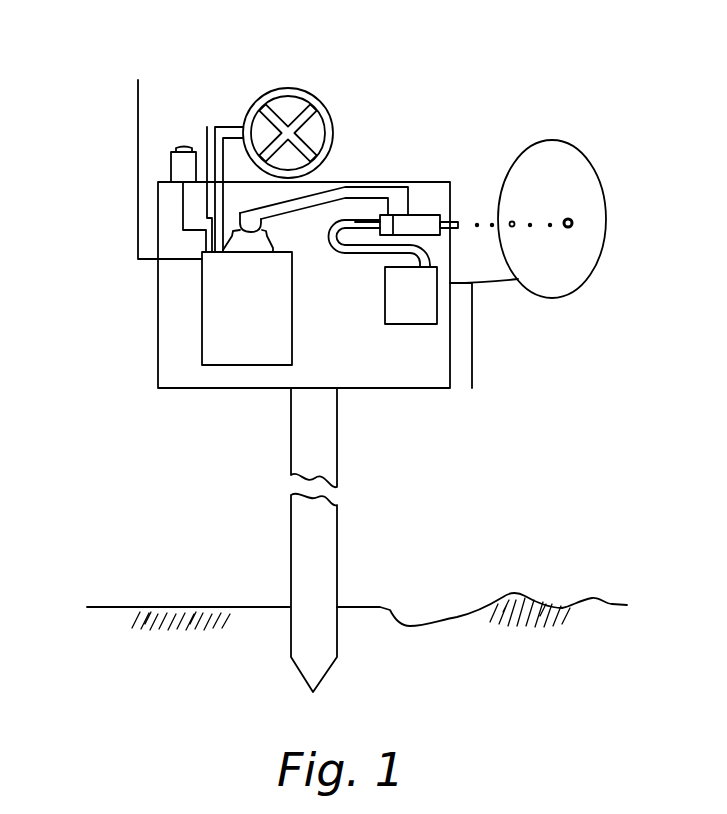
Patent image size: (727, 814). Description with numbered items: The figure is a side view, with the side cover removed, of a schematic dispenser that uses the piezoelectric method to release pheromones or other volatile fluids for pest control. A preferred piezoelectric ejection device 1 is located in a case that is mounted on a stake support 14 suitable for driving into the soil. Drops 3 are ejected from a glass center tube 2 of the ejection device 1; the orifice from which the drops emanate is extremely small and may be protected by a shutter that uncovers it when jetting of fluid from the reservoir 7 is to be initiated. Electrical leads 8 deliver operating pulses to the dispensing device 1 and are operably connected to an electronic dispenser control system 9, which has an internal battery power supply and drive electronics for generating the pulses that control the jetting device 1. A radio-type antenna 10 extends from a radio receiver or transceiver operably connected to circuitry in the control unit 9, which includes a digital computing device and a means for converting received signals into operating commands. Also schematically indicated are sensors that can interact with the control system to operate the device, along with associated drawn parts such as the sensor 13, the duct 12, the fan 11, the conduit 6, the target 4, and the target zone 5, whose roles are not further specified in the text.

The piezoelectric ejection device 1 is at (422, 216).
The glass center tube 2 is at (458, 222).
The drops 3 is at (512, 221).
The target 4 is at (568, 227).
The target zone 5 is at (603, 175).
The supply conduit 6 is at (376, 255).
The reservoir 7 is at (405, 325).
The electrical leads 8 is at (343, 186).
The electronic dispenser control system 9 is at (200, 312).
The radio antenna 10 is at (138, 203).
The fan 11 is at (297, 88).
The fan duct 12 is at (207, 127).
The sensor 13 is at (180, 147).
The stake support 14 is at (337, 523).